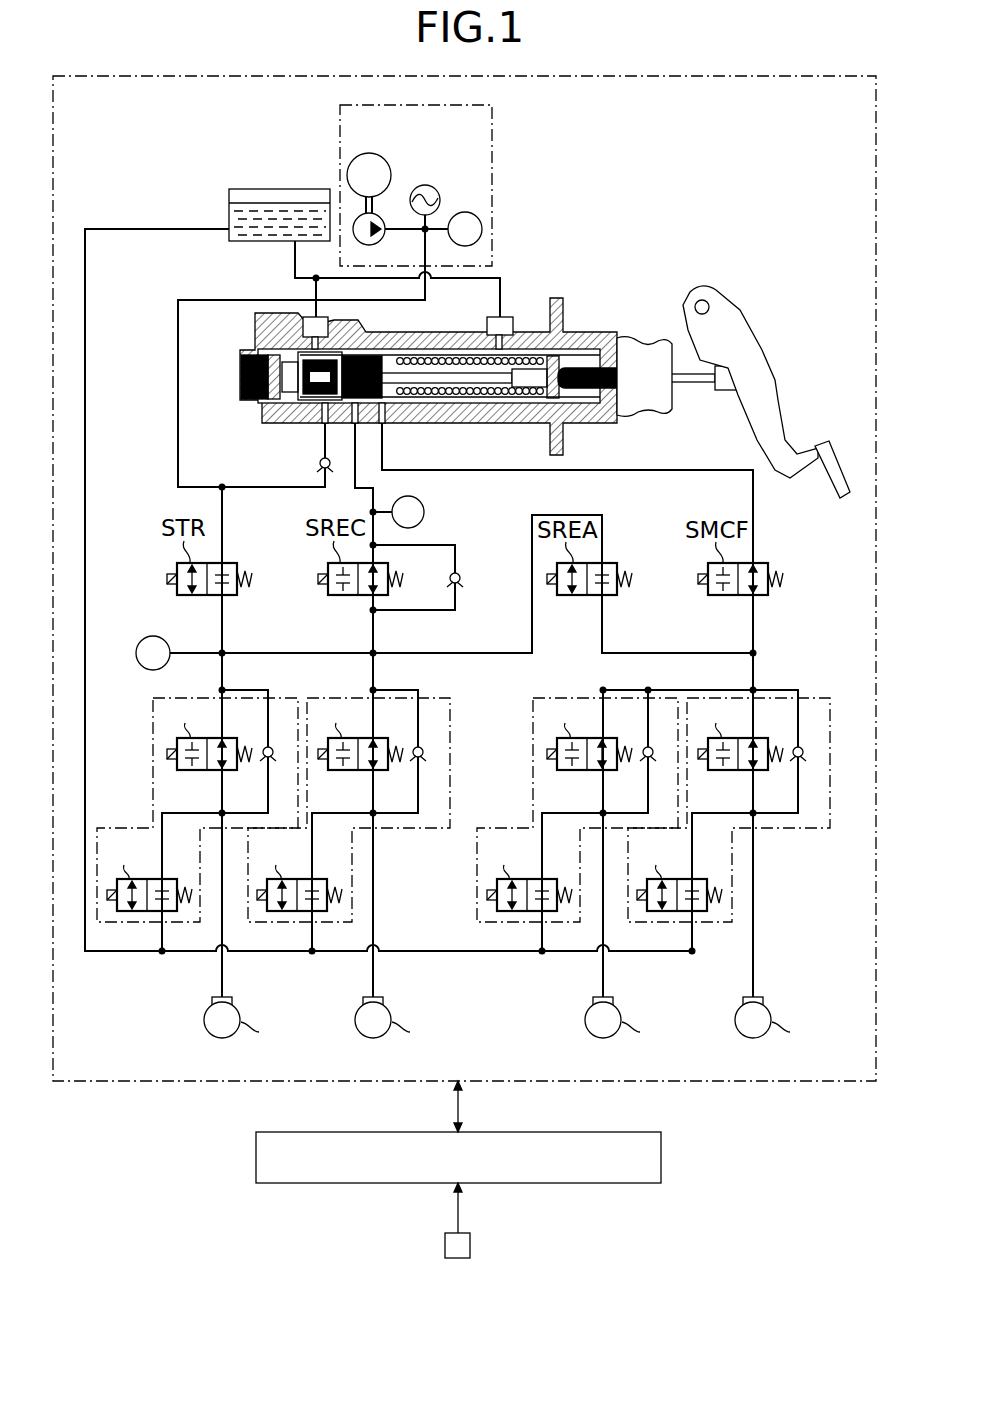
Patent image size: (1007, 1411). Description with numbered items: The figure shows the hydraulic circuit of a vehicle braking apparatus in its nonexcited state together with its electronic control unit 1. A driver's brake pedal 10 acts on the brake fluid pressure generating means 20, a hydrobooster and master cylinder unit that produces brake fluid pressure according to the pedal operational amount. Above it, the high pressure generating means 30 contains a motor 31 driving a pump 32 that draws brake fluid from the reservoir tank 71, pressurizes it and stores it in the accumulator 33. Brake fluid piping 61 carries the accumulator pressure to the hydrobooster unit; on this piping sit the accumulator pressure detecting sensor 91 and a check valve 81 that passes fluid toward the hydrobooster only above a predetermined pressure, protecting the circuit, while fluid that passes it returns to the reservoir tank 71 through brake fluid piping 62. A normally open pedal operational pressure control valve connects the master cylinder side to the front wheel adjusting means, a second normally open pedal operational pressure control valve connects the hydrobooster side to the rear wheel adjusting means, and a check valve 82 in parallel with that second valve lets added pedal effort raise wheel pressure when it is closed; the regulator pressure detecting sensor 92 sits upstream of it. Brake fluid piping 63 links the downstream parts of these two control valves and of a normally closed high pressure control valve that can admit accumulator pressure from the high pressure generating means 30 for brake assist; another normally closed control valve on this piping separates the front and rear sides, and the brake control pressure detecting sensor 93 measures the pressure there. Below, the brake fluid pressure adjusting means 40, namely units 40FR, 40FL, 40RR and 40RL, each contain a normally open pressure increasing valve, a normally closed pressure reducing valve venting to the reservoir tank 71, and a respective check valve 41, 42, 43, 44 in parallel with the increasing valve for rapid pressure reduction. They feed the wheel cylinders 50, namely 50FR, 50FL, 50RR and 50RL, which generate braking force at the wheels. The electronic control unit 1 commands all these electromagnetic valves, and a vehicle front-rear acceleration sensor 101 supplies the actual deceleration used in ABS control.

The electronic control unit (ECU) 1 is at (661, 1145).
The brake pedal 10 is at (786, 420).
The brake fluid pressure generating means 20 is at (581, 332).
The high pressure generating means 30 is at (440, 185).
The motor 31 is at (370, 153).
The pump 32 is at (372, 245).
The accumulator 33 is at (426, 185).
The brake fluid pressure adjusting means 40 is at (463, 810).
The brake fluid pressure adjusting means 40RL is at (198, 810).
The brake fluid pressure adjusting means 40RR is at (350, 810).
The brake fluid pressure adjusting means 40FL is at (578, 810).
The brake fluid pressure adjusting means 40FR is at (729, 810).
The check valve 41 is at (801, 747).
The check valve 42 is at (651, 747).
The check valve 43 is at (421, 747).
The check valve 44 is at (271, 747).
The wheel cylinder 50 is at (493, 1010).
The wheel cylinder 50RL is at (212, 998).
The wheel cylinder 50RR is at (363, 998).
The wheel cylinder 50FL is at (593, 998).
The wheel cylinder 50FR is at (743, 998).
The brake fluid piping 61 is at (210, 299).
The brake fluid piping 62 is at (290, 269).
The brake fluid piping 63 is at (296, 653).
The reservoir tank 71 is at (292, 189).
The check valve 81 is at (318, 462).
The check valve 82 is at (460, 581).
The accumulator pressure detecting sensor 91 is at (464, 212).
The regulator pressure detecting sensor 92 is at (424, 512).
The brake control pressure detecting sensor 93 is at (150, 636).
The vehicle front-rear acceleration sensor 101 is at (470, 1243).